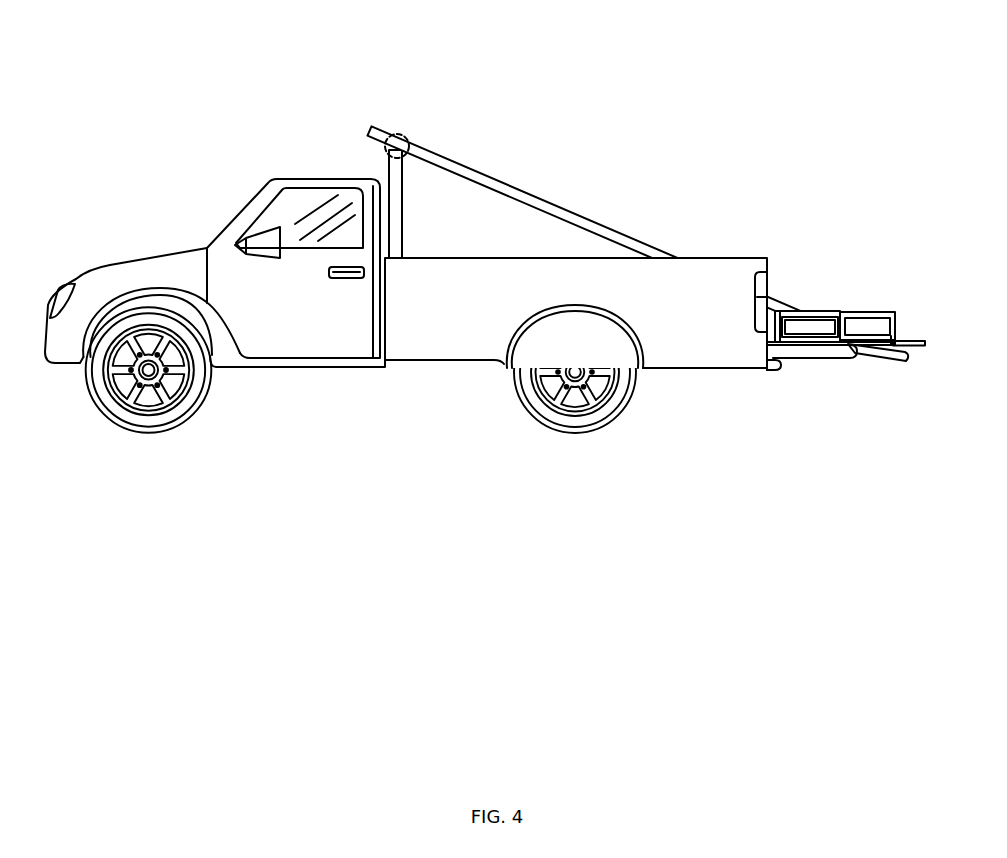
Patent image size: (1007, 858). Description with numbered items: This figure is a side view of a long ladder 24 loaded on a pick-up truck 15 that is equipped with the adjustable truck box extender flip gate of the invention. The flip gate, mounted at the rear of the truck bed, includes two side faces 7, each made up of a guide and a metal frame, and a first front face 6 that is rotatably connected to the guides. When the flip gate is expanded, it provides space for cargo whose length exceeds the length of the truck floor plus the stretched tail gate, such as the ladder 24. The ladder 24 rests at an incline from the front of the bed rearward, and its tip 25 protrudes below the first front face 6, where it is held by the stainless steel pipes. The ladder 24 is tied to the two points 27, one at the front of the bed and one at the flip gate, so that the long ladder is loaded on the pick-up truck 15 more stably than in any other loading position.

The first front face 6 is at (914, 346).
The side face 7 is at (798, 300).
The pick-up truck 15 is at (432, 340).
The long ladder 24 is at (549, 202).
The tip of the ladder 25 is at (907, 360).
The tie points 27 is at (396, 133).